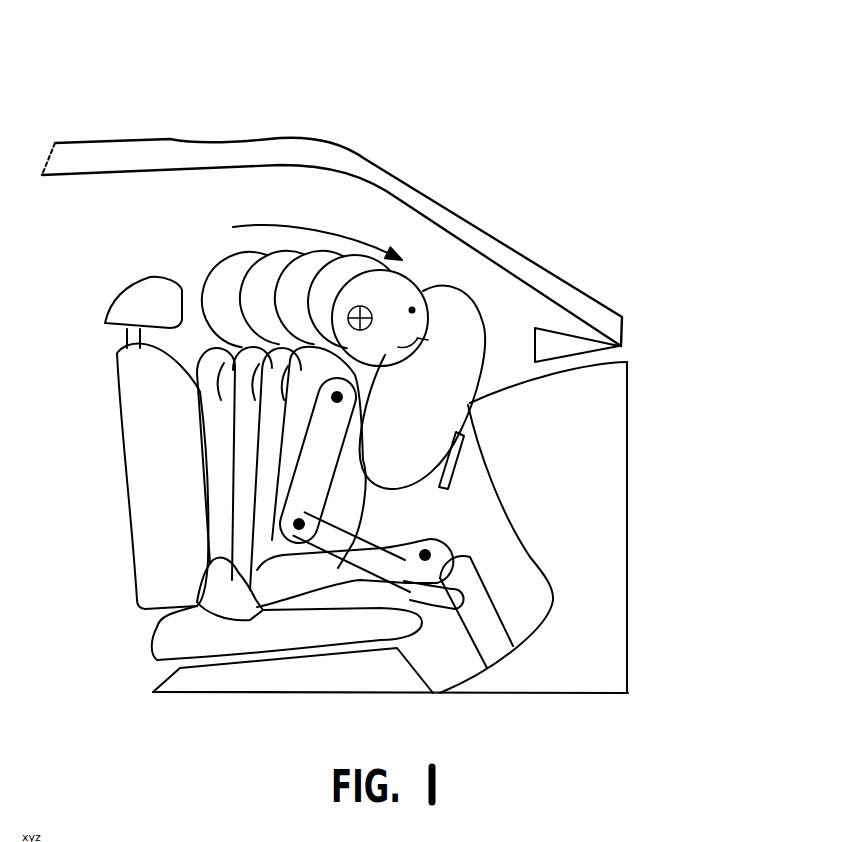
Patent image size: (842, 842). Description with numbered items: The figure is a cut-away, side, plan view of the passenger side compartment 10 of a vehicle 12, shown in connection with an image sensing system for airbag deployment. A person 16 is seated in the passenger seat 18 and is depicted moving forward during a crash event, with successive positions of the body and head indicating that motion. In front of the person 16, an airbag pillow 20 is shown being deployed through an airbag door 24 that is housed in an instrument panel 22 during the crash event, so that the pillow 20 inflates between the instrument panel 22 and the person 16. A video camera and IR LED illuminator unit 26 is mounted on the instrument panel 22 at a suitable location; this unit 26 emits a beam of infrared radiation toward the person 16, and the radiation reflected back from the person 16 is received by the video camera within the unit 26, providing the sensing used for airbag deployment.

The passenger side compartment 10 is at (456, 195).
The vehicle 12 is at (342, 147).
The person 16 is at (220, 277).
The passenger seat 18 is at (117, 413).
The airbag pillow 20 is at (477, 304).
The instrument panel 22 is at (610, 501).
The airbag door 24 is at (465, 489).
The video camera and IR LED illuminator unit 26 is at (558, 336).